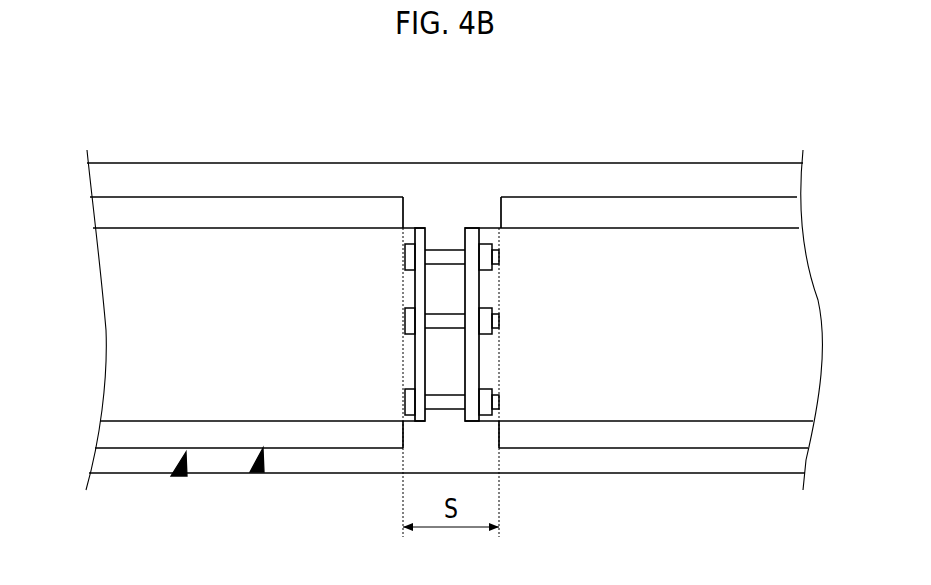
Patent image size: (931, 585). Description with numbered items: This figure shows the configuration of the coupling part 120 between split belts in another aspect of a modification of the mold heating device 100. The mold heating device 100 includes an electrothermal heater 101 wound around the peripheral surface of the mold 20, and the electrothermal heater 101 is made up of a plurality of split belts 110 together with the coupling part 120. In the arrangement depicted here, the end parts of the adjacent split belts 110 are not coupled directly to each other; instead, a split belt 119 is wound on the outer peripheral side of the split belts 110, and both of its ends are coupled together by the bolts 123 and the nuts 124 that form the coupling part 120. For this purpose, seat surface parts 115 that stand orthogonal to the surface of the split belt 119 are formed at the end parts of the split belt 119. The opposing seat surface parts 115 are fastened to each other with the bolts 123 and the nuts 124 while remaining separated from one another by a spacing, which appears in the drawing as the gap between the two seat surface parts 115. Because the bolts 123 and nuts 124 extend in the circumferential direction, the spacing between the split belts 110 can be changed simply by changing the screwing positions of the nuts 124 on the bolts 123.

The mold 20 is at (445, 124).
The split belt 110 is at (182, 196).
The split belt 119 is at (246, 226).
The coupling part 120 is at (452, 227).
The bolt 123 is at (410, 246).
The nut 124 is at (484, 243).
The seat surface part 115 is at (410, 280).
The mold heating device 100 is at (180, 478).
The electrothermal heater 101 is at (257, 475).